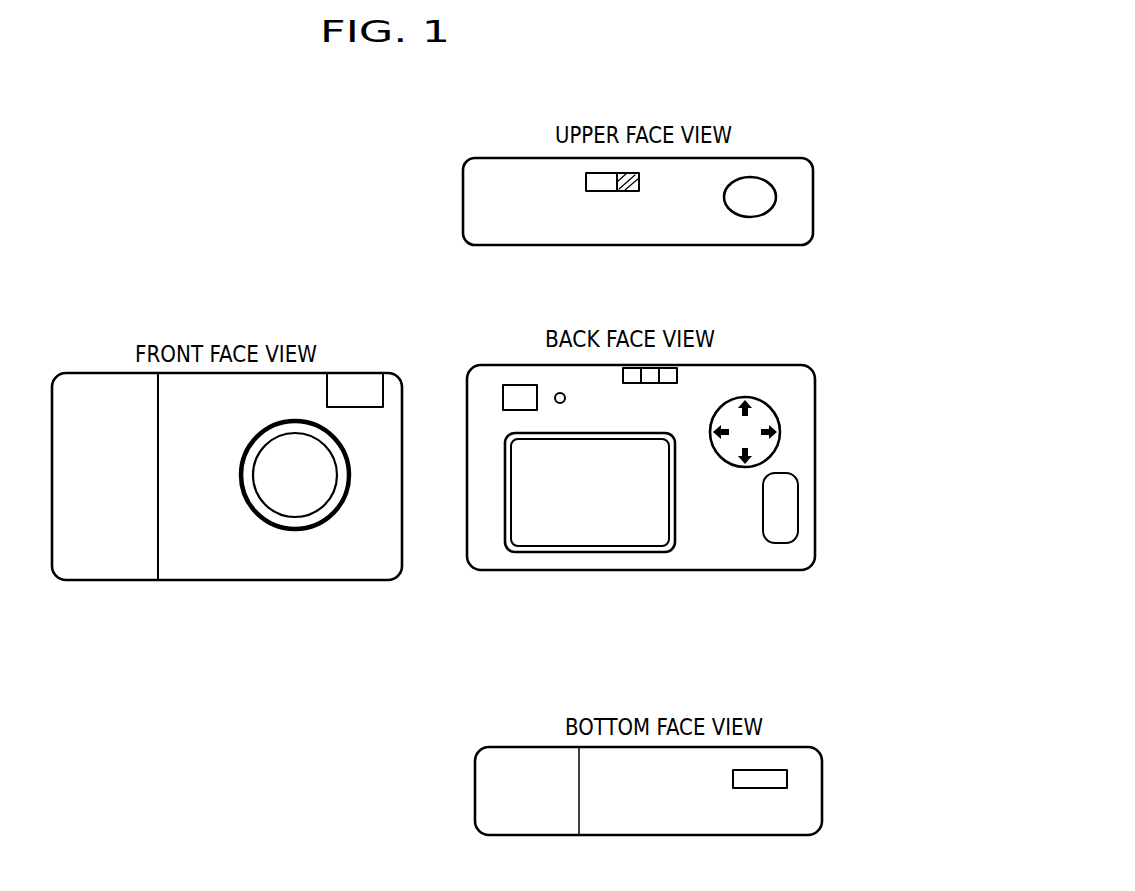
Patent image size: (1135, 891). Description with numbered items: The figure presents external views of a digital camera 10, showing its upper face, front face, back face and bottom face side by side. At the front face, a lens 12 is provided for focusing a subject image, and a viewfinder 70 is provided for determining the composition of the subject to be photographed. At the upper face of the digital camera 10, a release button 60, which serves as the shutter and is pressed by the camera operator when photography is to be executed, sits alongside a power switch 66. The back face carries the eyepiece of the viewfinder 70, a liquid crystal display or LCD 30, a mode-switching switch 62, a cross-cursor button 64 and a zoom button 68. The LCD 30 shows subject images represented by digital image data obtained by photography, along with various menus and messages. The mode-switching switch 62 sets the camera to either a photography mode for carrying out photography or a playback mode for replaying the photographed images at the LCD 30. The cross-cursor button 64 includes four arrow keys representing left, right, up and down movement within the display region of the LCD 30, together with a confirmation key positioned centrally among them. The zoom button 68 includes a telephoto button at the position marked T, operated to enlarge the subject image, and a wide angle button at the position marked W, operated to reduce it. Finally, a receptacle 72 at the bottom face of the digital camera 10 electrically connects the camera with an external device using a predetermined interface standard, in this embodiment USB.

The digital camera 10 is at (170, 257).
The lens 12 is at (288, 508).
The liquid crystal display (LCD) 30 is at (593, 543).
The release button 60 is at (752, 188).
The mode-switching switch 62 is at (787, 330).
The cross-cursor button 64 is at (737, 467).
The power switch 66 is at (602, 174).
The zoom button 68 is at (790, 497).
The viewfinder 70 is at (508, 388).
The receptacle 72 is at (760, 783).